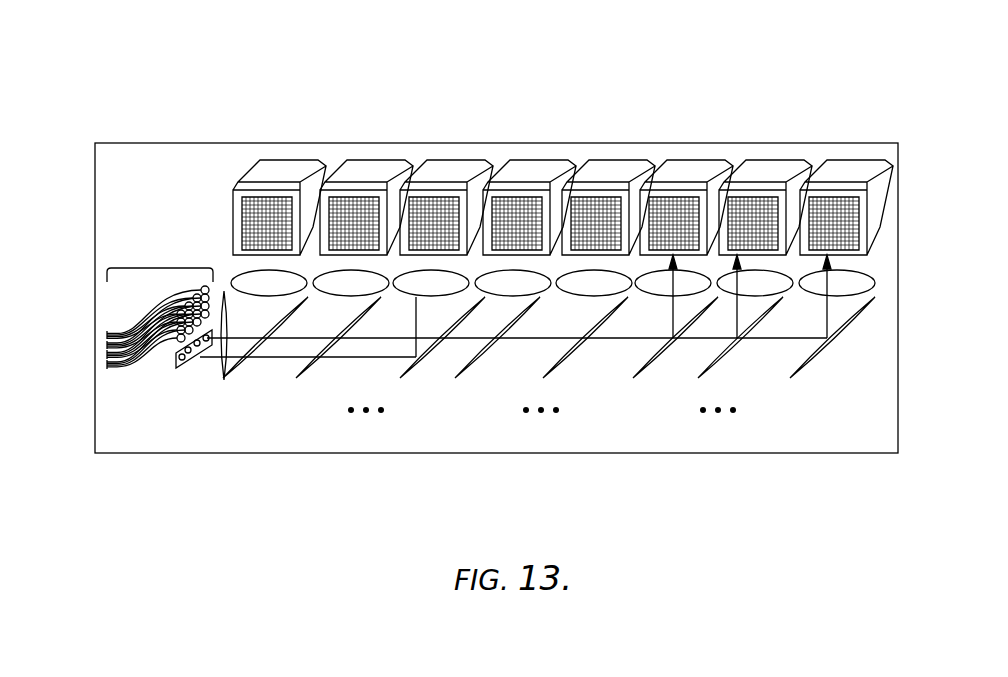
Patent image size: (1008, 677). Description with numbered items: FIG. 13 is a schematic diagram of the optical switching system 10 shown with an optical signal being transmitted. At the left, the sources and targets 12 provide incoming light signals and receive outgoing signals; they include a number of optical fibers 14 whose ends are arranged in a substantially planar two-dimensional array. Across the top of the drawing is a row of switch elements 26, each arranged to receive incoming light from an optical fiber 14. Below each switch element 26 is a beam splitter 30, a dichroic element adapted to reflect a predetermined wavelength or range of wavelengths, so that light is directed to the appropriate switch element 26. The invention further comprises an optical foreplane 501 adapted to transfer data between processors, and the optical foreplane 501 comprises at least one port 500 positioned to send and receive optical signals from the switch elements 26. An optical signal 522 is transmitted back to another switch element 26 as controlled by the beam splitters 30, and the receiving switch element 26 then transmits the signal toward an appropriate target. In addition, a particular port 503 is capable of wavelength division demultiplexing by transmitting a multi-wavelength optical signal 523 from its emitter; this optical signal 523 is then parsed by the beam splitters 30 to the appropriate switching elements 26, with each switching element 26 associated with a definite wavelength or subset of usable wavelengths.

The optical system 10 is at (813, 79).
The sources and targets 12 is at (165, 268).
The optical fibers 14 is at (128, 366).
The switch element 26 is at (375, 165).
The beam splitter 30 is at (660, 362).
The port 500 is at (186, 368).
The optical foreplane 501 is at (197, 364).
The port 503 is at (224, 381).
The optical signal 522 is at (335, 358).
The optical signal 523 is at (530, 338).